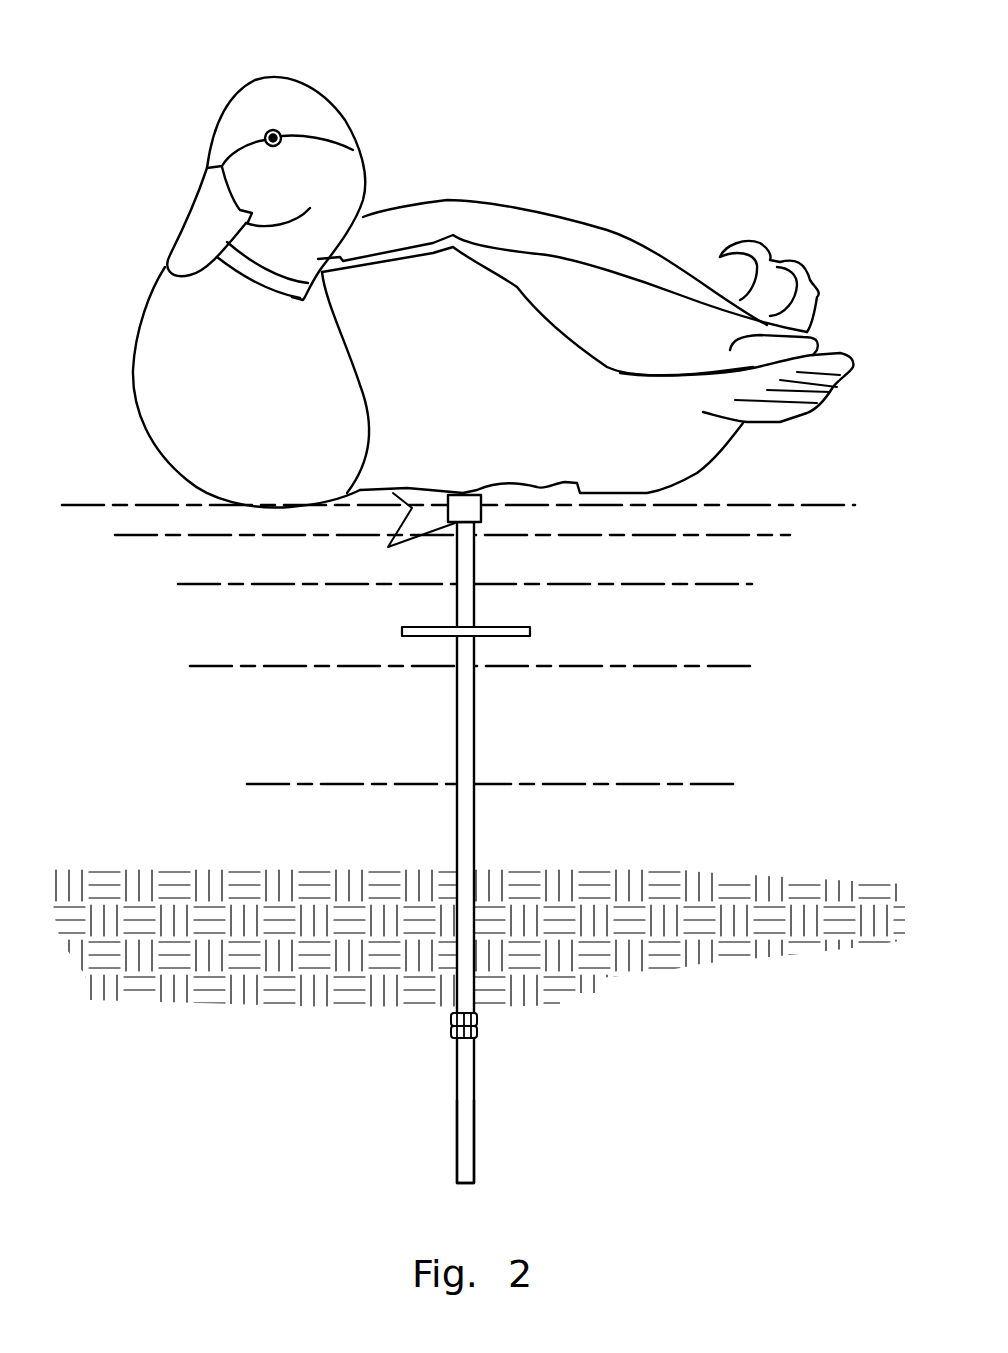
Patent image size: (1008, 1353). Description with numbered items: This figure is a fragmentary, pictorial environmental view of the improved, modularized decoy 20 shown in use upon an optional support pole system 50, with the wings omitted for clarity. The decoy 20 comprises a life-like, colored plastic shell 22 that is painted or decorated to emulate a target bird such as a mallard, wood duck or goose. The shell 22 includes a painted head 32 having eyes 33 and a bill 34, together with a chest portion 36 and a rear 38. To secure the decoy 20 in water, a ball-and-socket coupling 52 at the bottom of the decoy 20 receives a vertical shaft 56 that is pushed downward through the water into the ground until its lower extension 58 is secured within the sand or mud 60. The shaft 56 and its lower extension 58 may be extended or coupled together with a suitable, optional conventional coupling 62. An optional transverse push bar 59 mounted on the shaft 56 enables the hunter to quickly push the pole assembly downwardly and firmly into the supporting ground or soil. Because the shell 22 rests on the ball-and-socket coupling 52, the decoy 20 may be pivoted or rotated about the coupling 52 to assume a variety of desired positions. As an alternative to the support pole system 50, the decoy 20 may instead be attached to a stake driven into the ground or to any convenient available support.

The decoy 20 is at (642, 137).
The shell 22 is at (410, 218).
The head 32 is at (318, 112).
The eyes 33 is at (266, 132).
The bill 34 is at (178, 250).
The chest portion 36 is at (431, 458).
The rear 38 is at (807, 330).
The support pole system 50 is at (522, 604).
The ball-and-socket coupling 52 is at (477, 495).
The vertical shaft 56 is at (472, 737).
The lower extension 58 is at (476, 1138).
The transverse push bar 59 is at (428, 627).
The sand or mud 60 is at (253, 990).
The coupling 62 is at (478, 1023).